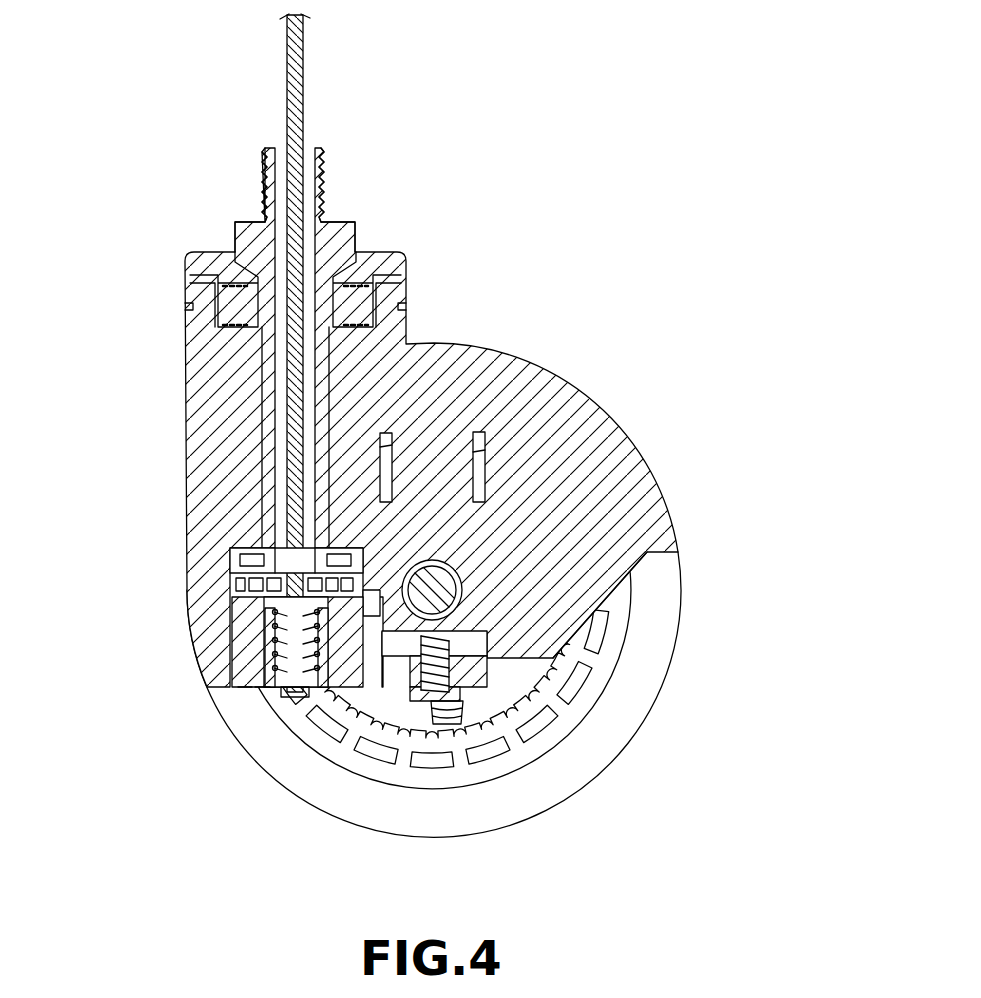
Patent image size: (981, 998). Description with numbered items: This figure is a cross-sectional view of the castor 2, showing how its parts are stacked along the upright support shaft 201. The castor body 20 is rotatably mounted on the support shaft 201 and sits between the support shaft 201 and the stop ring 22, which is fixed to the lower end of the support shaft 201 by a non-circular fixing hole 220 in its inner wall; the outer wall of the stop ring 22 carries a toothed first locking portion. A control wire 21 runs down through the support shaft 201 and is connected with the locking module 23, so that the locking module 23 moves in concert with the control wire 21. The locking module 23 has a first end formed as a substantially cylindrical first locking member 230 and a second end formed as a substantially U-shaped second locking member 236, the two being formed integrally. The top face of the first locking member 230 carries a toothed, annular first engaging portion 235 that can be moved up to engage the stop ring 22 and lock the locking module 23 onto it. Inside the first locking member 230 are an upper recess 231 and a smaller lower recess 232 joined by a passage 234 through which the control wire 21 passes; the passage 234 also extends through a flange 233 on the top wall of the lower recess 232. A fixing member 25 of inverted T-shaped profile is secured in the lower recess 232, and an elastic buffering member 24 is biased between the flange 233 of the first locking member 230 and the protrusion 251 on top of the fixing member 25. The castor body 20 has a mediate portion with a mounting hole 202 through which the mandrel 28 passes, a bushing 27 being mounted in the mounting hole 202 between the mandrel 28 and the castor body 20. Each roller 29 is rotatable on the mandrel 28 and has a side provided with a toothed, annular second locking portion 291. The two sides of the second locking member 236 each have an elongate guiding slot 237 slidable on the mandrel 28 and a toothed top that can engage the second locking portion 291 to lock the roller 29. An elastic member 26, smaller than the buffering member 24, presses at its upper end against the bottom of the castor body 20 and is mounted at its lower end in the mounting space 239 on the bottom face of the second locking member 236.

The castor 2 is at (563, 289).
The castor body 20 is at (607, 425).
The support shaft 201 is at (352, 227).
The mounting hole 202 is at (615, 572).
The control wire 21 is at (298, 103).
The stop ring 22 is at (240, 559).
The fixing hole 220 is at (272, 562).
The locking module 23 is at (235, 698).
The first locking member 230 is at (240, 686).
The upper recess 231 is at (260, 595).
The lower recess 232 is at (268, 648).
The flange 233 is at (272, 620).
The passage 234 is at (312, 690).
The first engaging portion 235 is at (257, 582).
The second locking member 236 is at (470, 673).
The guiding slot 237 is at (452, 636).
The mounting space 239 is at (420, 700).
The buffering member 24 is at (262, 688).
The fixing member 25 is at (275, 670).
The protrusion 251 is at (252, 695).
The elastic member 26 is at (456, 708).
The bushing 27 is at (455, 567).
The mandrel 28 is at (460, 596).
The roller 29 is at (665, 608).
The second locking portion 291 is at (548, 676).